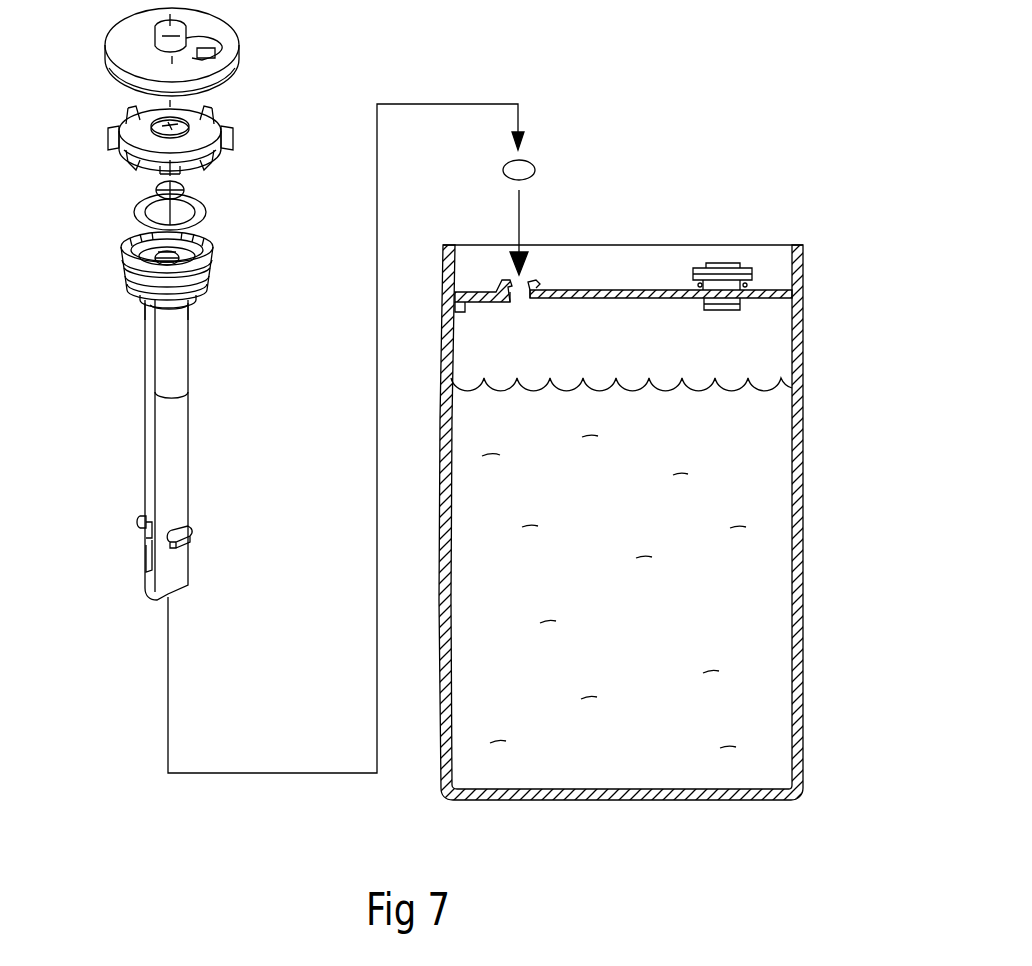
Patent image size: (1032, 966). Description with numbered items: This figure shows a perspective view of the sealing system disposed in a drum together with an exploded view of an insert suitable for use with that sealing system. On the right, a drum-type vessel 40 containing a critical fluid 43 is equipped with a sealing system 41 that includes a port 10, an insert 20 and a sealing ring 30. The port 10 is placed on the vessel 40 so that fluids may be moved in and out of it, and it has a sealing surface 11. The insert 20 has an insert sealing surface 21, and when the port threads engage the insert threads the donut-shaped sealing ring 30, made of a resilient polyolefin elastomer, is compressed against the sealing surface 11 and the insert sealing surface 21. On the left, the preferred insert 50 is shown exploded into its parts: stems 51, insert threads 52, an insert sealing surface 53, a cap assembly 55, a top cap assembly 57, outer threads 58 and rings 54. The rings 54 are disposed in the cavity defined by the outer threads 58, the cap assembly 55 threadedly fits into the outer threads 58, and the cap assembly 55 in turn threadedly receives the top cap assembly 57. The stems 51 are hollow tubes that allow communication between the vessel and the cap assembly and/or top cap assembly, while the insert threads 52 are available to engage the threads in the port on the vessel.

The port 10 is at (692, 318).
The sealing surface 11 is at (706, 298).
The insert 20 is at (709, 264).
The insert sealing surface 21 is at (702, 286).
The sealing ring 30 is at (534, 162).
The vessel 40 is at (805, 550).
The sealing system 41 is at (798, 292).
The critical fluid 43 is at (766, 398).
The insert 50 is at (280, 142).
The stems 51 is at (189, 474).
The insert threads 52 is at (210, 292).
The insert sealing surface 53 is at (143, 300).
The rings 54 is at (184, 188).
The cap assembly 55 is at (232, 151).
The top cap assembly 57 is at (240, 42).
The outer threads 58 is at (214, 258).